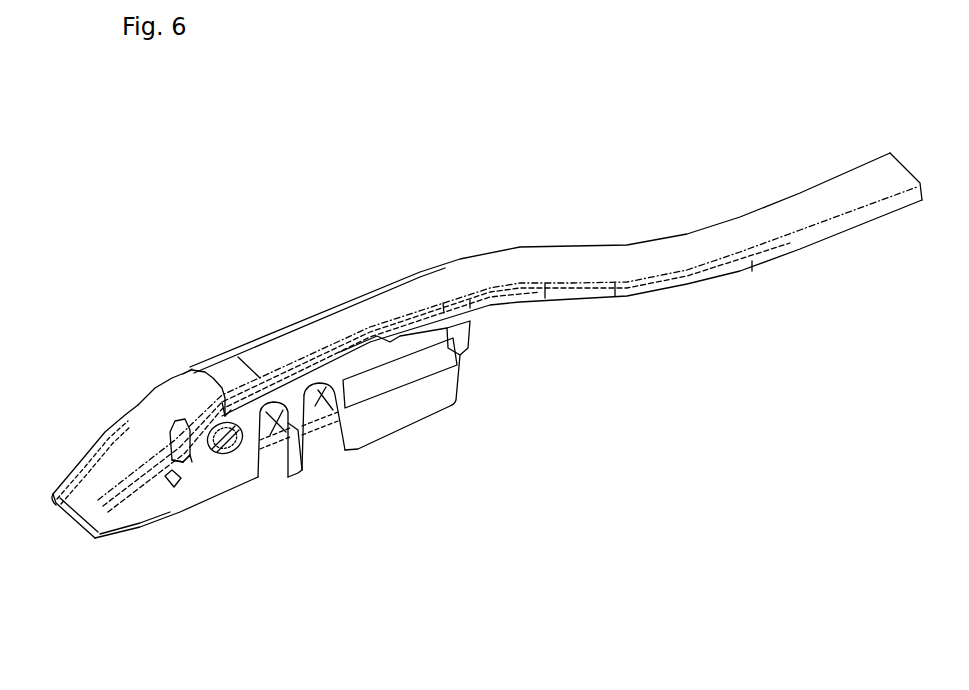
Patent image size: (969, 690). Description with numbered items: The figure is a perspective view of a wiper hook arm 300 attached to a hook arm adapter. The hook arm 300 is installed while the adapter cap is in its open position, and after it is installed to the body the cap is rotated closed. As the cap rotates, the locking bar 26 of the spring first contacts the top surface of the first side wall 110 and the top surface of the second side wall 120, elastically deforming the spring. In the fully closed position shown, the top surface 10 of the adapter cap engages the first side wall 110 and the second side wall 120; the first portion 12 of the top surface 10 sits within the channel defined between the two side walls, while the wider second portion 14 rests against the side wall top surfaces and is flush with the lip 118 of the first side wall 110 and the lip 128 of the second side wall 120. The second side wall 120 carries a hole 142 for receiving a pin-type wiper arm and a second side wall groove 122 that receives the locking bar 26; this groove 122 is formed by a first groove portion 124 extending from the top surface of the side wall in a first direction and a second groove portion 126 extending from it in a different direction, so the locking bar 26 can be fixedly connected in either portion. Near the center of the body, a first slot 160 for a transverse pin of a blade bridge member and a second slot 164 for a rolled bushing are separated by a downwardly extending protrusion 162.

The wiper hook arm 300 is at (572, 247).
The top surface 10 is at (122, 441).
The first portion 12 is at (97, 483).
The second portion 14 is at (179, 394).
The locking bar 26 is at (165, 455).
The first side wall 110 is at (56, 493).
The lip 118 is at (188, 366).
The second side wall 120 is at (135, 530).
The second side wall groove 122 is at (193, 615).
The first groove portion 124 is at (190, 460).
The second groove portion 126 is at (172, 475).
The lip 128 is at (228, 410).
The hole 142 is at (226, 448).
The first slot 160 is at (281, 425).
The protrusion 162 is at (296, 425).
The second slot 164 is at (322, 422).